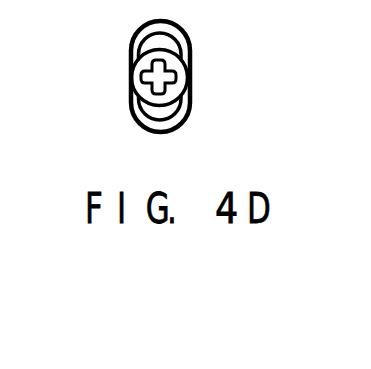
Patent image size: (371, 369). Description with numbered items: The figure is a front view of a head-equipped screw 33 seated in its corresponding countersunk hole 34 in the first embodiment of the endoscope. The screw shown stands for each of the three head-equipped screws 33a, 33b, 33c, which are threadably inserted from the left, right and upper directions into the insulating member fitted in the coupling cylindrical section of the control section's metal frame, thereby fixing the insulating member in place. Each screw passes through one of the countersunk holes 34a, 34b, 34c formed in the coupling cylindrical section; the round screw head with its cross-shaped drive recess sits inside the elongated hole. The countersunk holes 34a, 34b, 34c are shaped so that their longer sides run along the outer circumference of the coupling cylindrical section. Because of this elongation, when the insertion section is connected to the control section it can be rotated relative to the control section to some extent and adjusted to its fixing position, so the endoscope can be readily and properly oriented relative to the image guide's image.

The countersunk hole 34 is at (249, 76).
The countersunk hole 34a is at (249, 76).
The countersunk hole 34b is at (249, 76).
The countersunk hole 34c is at (249, 76).
The head-equipped screw 33 is at (250, 88).
The head-equipped screw 33a is at (250, 88).
The head-equipped screw 33b is at (250, 88).
The head-equipped screw 33c is at (184, 90).